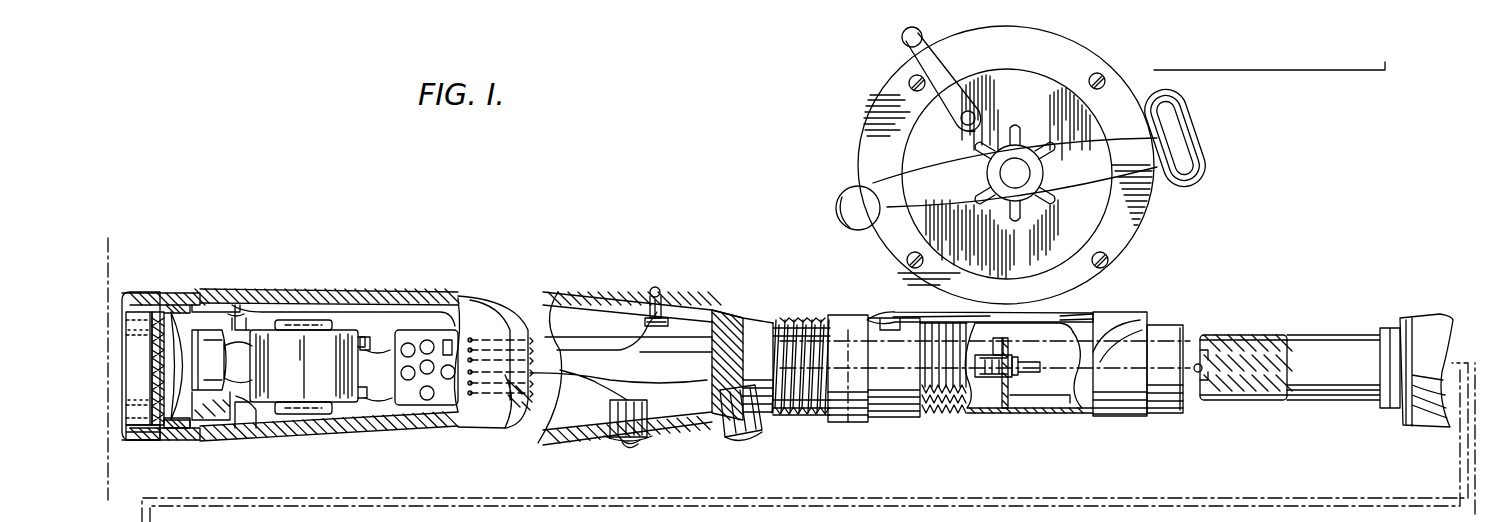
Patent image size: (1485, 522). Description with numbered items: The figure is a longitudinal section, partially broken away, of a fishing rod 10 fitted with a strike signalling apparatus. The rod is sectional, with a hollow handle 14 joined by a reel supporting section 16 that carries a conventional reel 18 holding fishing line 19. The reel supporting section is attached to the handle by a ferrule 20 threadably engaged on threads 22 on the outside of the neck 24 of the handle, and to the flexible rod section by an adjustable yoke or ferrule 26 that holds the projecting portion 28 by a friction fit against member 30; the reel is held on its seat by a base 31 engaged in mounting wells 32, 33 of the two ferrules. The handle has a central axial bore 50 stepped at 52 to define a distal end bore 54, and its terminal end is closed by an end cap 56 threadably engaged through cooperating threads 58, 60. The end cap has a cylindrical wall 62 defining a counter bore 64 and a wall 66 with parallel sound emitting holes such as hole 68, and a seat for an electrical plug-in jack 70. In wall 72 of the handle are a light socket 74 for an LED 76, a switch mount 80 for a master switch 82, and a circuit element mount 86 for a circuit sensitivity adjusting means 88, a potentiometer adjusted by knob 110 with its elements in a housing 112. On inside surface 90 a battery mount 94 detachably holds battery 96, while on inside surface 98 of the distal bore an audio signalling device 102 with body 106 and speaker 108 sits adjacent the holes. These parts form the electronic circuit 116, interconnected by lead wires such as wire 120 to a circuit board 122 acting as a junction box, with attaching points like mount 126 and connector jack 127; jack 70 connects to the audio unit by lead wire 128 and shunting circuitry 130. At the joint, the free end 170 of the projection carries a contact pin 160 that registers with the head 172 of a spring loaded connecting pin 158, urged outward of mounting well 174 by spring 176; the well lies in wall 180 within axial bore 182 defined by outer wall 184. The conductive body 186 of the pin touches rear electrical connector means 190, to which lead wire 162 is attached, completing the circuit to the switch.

The fishing rod 10 is at (468, 210).
The handle 14 is at (368, 448).
The reel supporting section 16 is at (1015, 418).
The reel 18 is at (850, 156).
The fishing line 19 is at (1268, 72).
The ferrule 20 is at (858, 313).
The threads 22 is at (808, 416).
The neck 24 is at (796, 318).
The adjustable yoke or ferrule 26 is at (1170, 320).
The projecting portion 28 is at (1358, 325).
The member 30 is at (1425, 318).
The base 31 is at (1080, 318).
The mounting well 32 is at (896, 312).
The mounting well 33 is at (1124, 325).
The central axial bore 50 is at (568, 310).
The step 52 is at (262, 418).
The distal end bore 54 is at (220, 420).
The end cap 56 is at (196, 300).
The threads 58 is at (236, 320).
The threads 60 is at (186, 294).
The cylindrical wall 62 is at (140, 296).
The counter bore 64 is at (108, 462).
The wall 66 is at (153, 312).
The sound emitting hole 68 is at (156, 386).
The electrical plug-in jack 70 is at (146, 442).
The wall 72 is at (286, 298).
The light socket 74 is at (665, 312).
The LED 76 is at (655, 287).
The switch mount 80 is at (620, 417).
The master switch 82 is at (650, 448).
The circuit element mount 86 is at (728, 430).
The circuit sensitivity adjusting means 88 is at (748, 444).
The inside surface 90 is at (560, 395).
The battery mount 94 is at (318, 320).
The battery 96 is at (304, 366).
The inside surface 98 is at (236, 320).
The audio signalling device 102 is at (236, 310).
The body 106 is at (232, 387).
The speaker 108 is at (186, 426).
The knob 110 is at (782, 413).
The housing 112 is at (713, 420).
The electronic circuit 116 is at (690, 330).
The lead wire 120 is at (572, 337).
The circuit board 122 is at (444, 326).
The mount 126 is at (486, 330).
The connector jack 127 is at (370, 336).
The lead wire 128 is at (176, 421).
The shunting circuitry 130 is at (204, 392).
The spring loaded connecting pin 158 is at (1016, 352).
The contact pin 160 is at (1197, 372).
The lead wire 162 is at (850, 424).
The free end 170 is at (1215, 330).
The head 172 is at (1020, 366).
The mounting well 174 is at (968, 400).
The spring 176 is at (1018, 376).
The wall 180 is at (1000, 405).
The axial bore 182 is at (1058, 408).
The outer wall 184 is at (1036, 410).
The electrically conductive body 186 is at (996, 338).
The rear electrical connector means 190 is at (978, 355).